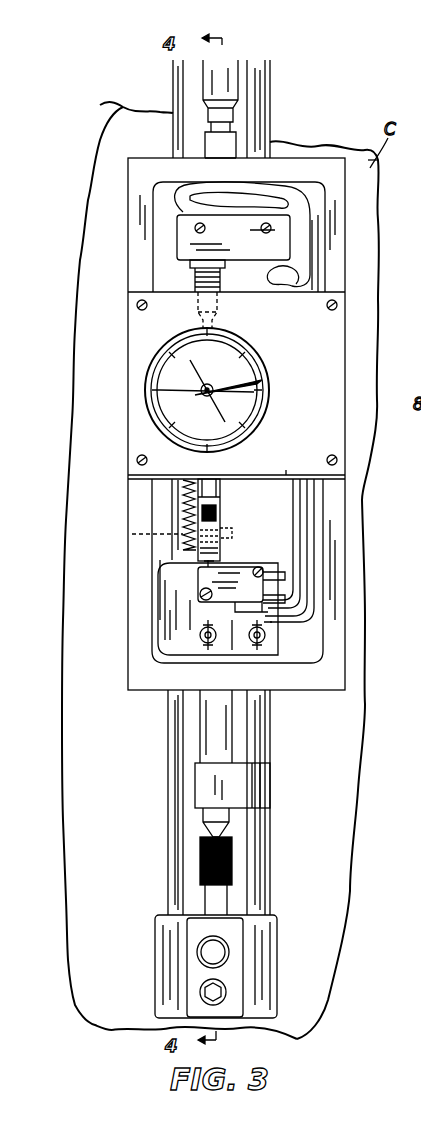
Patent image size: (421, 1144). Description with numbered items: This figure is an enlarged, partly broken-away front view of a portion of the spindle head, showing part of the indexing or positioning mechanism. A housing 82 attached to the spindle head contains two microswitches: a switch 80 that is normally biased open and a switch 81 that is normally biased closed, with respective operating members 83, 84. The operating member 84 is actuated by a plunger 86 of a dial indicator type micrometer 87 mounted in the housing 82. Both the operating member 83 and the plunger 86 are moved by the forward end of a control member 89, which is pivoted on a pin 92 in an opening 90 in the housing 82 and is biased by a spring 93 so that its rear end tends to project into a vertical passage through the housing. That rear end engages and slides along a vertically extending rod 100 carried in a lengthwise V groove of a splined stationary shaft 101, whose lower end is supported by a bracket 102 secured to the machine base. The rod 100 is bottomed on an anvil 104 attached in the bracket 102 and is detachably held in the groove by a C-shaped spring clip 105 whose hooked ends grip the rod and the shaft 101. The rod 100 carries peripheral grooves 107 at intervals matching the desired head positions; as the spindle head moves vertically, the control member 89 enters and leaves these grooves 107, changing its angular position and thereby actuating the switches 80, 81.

The switch 80 is at (230, 572).
The switch 81 is at (182, 246).
The housing 82 is at (134, 672).
The operating member 83 is at (216, 555).
The operating member 84 is at (230, 310).
The plunger 86 is at (218, 516).
The dial indicator type micrometer 87 is at (270, 386).
The control member 89 is at (222, 531).
The opening 90 is at (218, 500).
The pin 92 is at (148, 545).
The spring 93 is at (190, 500).
The rod 100 is at (206, 732).
The splined stationary shaft 101 is at (176, 836).
The bracket 102 is at (175, 931).
The anvil 104 is at (203, 862).
The clip 105 is at (203, 787).
The groove 107 is at (250, 120).